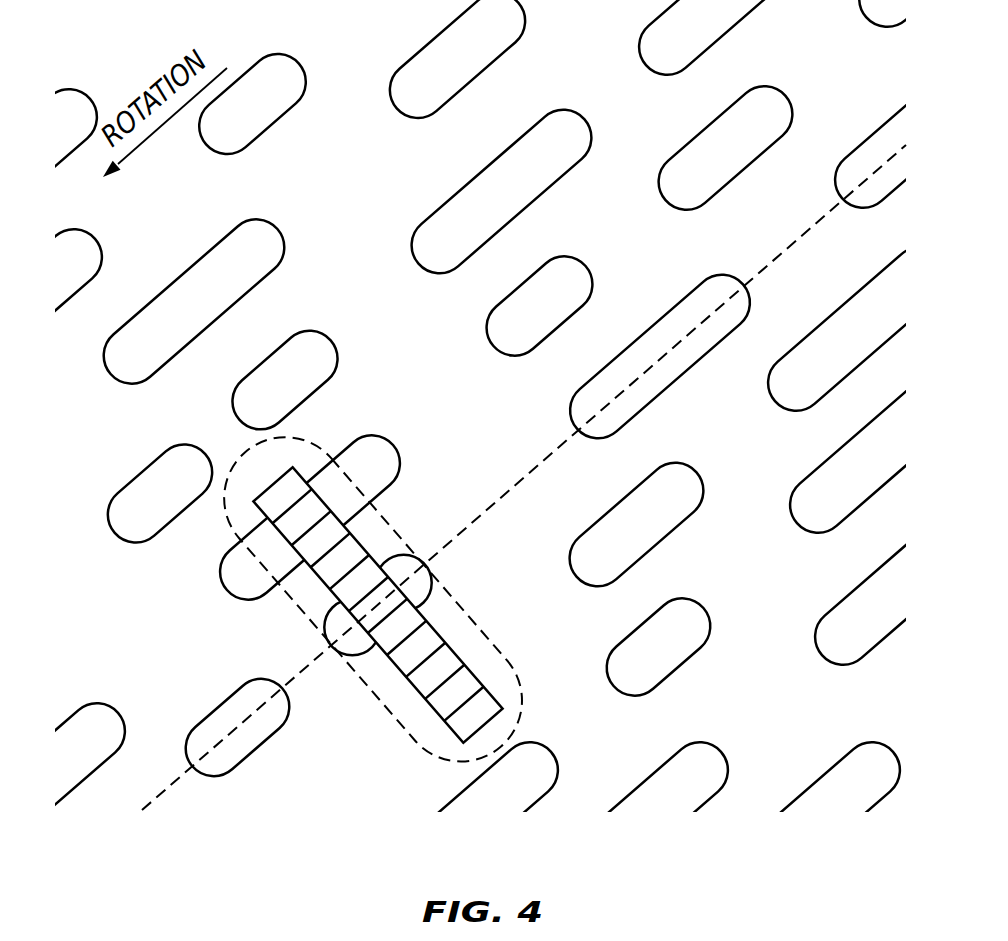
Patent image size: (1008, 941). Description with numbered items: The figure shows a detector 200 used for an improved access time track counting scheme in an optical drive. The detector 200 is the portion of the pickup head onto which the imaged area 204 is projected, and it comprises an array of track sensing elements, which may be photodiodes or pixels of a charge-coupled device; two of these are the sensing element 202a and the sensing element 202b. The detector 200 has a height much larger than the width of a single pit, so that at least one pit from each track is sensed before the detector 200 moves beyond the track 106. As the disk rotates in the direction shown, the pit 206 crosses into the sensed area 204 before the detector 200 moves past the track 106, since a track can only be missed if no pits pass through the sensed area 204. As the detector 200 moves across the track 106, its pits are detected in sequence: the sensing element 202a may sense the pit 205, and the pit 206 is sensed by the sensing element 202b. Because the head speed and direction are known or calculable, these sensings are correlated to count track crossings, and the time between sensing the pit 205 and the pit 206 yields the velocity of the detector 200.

The track 106 is at (536, 466).
The detector 200 is at (283, 590).
The sensing element 202a is at (431, 597).
The sensing element 202b is at (371, 667).
The imaged area 204 is at (318, 443).
The pit 205 is at (326, 627).
The pit 206 is at (666, 388).